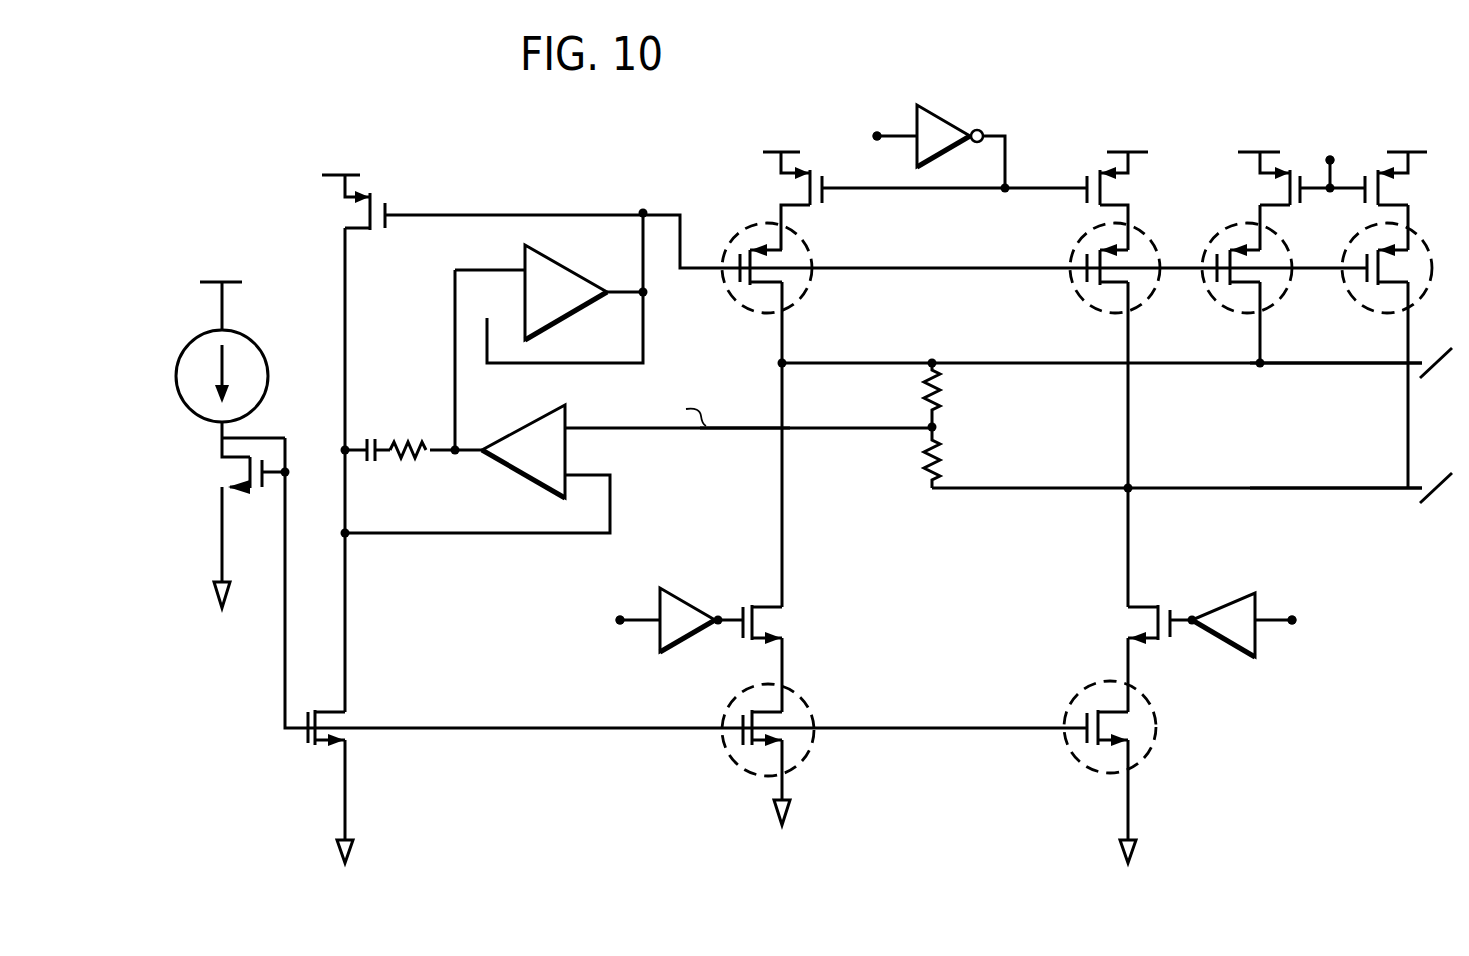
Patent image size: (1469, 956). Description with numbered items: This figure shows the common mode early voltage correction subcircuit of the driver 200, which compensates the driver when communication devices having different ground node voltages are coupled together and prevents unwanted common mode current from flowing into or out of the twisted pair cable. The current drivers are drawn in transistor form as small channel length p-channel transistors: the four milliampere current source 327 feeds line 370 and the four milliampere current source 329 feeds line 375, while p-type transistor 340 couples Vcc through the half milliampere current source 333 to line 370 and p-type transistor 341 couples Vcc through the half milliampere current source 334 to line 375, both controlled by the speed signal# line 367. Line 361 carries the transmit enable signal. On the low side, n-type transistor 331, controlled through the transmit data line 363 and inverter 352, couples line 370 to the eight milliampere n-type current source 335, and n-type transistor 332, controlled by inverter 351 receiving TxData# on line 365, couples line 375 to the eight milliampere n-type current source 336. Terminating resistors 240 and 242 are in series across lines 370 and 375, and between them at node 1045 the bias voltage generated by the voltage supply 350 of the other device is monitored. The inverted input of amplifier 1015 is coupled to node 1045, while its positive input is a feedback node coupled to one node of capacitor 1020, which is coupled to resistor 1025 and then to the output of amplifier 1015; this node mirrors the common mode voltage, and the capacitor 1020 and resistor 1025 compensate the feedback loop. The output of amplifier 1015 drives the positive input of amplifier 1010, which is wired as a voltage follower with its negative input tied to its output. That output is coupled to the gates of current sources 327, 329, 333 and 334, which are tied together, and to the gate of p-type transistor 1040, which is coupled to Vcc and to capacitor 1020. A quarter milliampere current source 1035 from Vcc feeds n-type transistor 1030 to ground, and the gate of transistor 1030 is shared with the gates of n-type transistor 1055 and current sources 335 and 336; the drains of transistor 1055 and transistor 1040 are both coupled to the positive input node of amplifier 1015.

The driver 200 is at (227, 187).
The p-type transistor 1040 is at (345, 213).
The 0.25 mA current source 1035 is at (180, 352).
The n-type transistor 1030 is at (227, 472).
The amplifier 1010 is at (583, 254).
The amplifier 1015 is at (521, 488).
The capacitor 1020 is at (372, 466).
The resistor 1025 is at (407, 442).
The node 1045 is at (746, 433).
The n-type transistor 1055 is at (313, 748).
The 4 mA current source 327 is at (736, 319).
The 4 mA current source 329 is at (1086, 319).
The 0.5 mA current source 333 is at (1221, 319).
The 0.5 mA current source 334 is at (1356, 319).
The p-type transistor 340 is at (1265, 189).
The p-type transistor 341 is at (1400, 189).
The n-type transistor 331 is at (772, 623).
The n-type transistor 332 is at (1136, 623).
The 8 mA current source 335 is at (811, 713).
The 8 mA current source 336 is at (1164, 735).
The voltage supply 350 is at (687, 606).
The inverter 351 is at (1229, 603).
The inverter 352 is at (950, 155).
The line 361 is at (888, 132).
The transmit data line 363 is at (633, 624).
The line 365 is at (1281, 627).
The speed signal# line 367 is at (1331, 148).
The terminating resistor 240 is at (922, 399).
The terminating resistor 242 is at (922, 464).
The line 370 is at (1338, 368).
The line 375 is at (1338, 493).